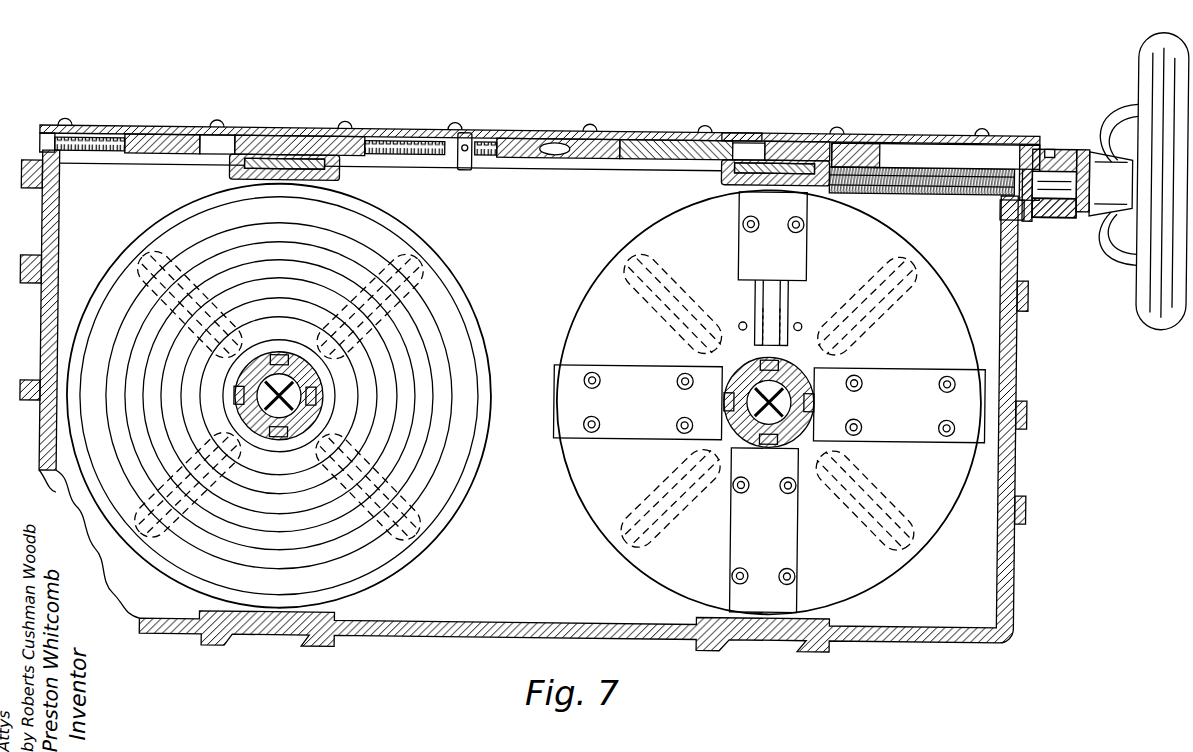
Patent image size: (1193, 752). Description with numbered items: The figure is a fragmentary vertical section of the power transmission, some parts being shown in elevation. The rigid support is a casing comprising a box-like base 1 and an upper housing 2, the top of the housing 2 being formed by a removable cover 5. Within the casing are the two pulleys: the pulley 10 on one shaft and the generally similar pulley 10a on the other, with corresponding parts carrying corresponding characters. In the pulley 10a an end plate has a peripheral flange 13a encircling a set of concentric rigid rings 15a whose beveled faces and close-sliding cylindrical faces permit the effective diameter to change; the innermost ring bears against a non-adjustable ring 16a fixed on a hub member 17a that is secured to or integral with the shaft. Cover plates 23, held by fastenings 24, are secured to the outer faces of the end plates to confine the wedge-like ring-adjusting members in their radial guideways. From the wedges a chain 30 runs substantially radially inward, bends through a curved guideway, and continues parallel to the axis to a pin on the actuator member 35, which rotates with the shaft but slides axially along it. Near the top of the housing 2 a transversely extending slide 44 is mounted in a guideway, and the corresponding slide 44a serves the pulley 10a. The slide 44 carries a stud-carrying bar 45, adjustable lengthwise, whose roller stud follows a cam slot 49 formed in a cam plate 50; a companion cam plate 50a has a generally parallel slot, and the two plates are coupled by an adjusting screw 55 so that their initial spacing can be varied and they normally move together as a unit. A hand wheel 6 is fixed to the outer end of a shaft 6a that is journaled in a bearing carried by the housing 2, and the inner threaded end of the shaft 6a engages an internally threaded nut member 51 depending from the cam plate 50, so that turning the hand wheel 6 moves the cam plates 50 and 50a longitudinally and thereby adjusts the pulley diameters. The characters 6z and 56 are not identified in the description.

The base 1 is at (1007, 552).
The housing 2 is at (1019, 258).
The cover 5 is at (758, 133).
The hand wheel 6 is at (1150, 315).
The shaft 6a is at (1053, 165).
The bearing cap 6z is at (1052, 212).
The pulley 10 is at (770, 402).
The pulley 10a is at (294, 395).
The peripheral flange 13a is at (430, 448).
The concentric rigid rings 15a is at (440, 462).
The non-adjustable ring 16a is at (258, 440).
The hub member 17a is at (282, 350).
The cover plates 23 is at (785, 538).
The fastenings 24 is at (738, 568).
The chain 30 is at (738, 400).
The actuator member 35 is at (782, 372).
The slide 44 is at (746, 135).
The slide 44a is at (290, 152).
The stud-carrying bar 45 is at (785, 158).
The cam slot 49 is at (738, 142).
The cam plate 50 is at (640, 136).
The cam plate 50a is at (352, 137).
The nut member 51 is at (875, 184).
The adjusting screw 55 is at (470, 135).
The screw sleeve 56 is at (934, 145).